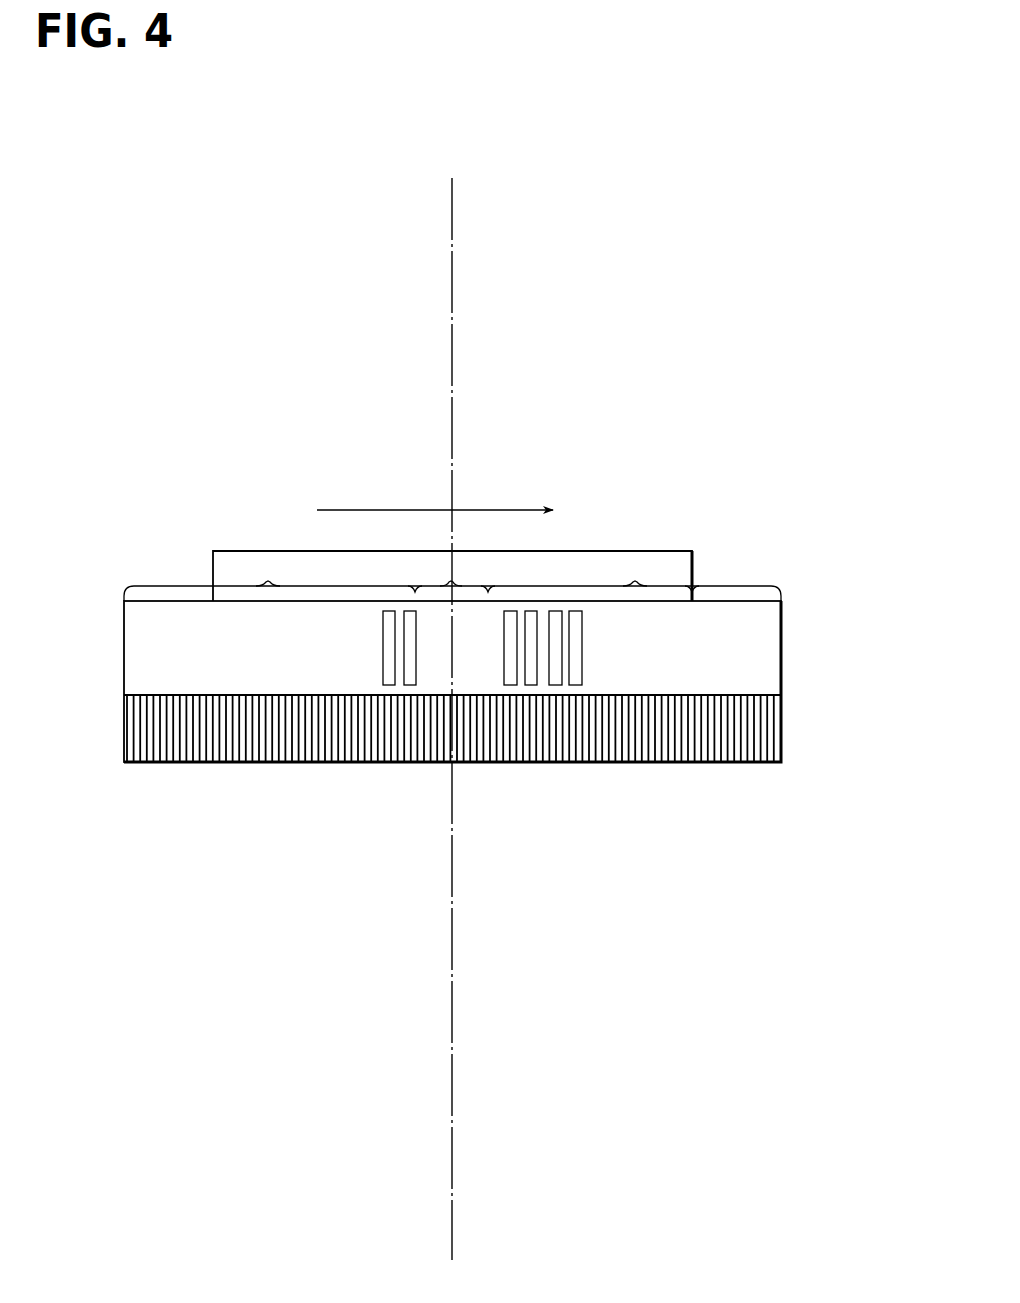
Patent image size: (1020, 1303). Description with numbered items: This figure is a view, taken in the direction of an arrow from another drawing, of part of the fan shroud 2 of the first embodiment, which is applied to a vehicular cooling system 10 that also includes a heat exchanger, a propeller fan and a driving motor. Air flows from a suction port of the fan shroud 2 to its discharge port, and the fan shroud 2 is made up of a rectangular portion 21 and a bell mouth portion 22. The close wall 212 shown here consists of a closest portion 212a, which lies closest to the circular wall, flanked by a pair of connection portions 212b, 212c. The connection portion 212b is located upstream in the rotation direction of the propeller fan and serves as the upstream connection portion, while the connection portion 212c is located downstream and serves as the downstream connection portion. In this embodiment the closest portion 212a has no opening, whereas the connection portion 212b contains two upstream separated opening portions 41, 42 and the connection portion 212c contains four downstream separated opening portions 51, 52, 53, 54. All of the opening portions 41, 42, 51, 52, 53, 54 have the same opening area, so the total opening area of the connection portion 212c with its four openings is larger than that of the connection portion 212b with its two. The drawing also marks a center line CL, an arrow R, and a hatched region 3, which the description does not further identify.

The vehicular cooling system 10 is at (810, 442).
The fan shroud 2 is at (506, 699).
The rectangular portion 21 is at (792, 619).
The bell mouth portion 22 is at (702, 558).
The close wall 212 is at (460, 576).
The closest portion 212a is at (451, 574).
The connection portion 212b is at (269, 571).
The connection portion 212c is at (652, 574).
The wiping member 3 is at (727, 730).
The upstream separated opening portion 41 is at (390, 687).
The upstream separated opening portion 42 is at (412, 687).
The downstream separated opening portion 51 is at (510, 687).
The downstream separated opening portion 52 is at (532, 687).
The downstream separated opening portion 53 is at (553, 687).
The downstream separated opening portion 54 is at (575, 687).
The center line CL is at (452, 335).
The relative movement direction R is at (530, 510).